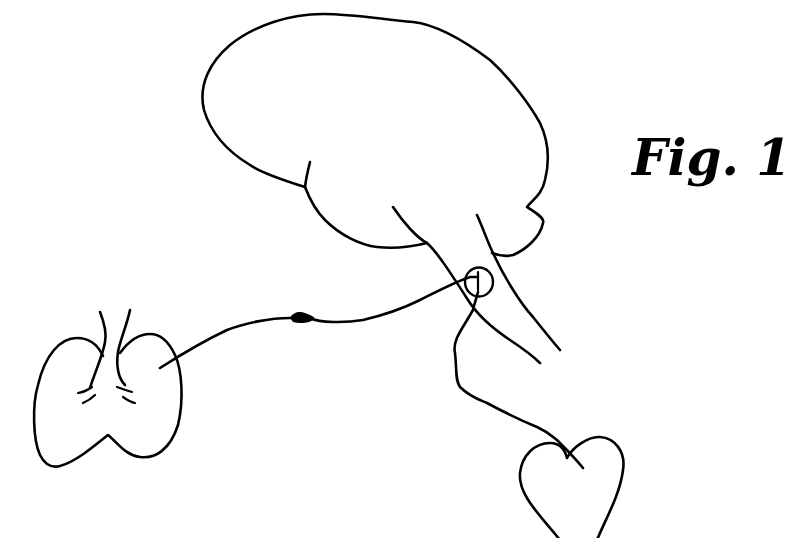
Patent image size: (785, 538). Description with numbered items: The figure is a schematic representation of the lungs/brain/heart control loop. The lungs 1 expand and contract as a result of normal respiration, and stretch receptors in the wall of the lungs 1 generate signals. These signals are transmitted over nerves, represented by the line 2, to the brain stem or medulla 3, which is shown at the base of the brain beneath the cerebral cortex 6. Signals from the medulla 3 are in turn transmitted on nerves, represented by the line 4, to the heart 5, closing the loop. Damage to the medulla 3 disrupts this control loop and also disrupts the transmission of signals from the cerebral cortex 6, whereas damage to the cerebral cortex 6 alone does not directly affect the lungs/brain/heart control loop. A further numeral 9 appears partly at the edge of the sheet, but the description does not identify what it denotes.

The lungs 1 is at (72, 350).
The nerves (line) 2 is at (227, 332).
The brain stem or medulla 3 is at (490, 283).
The nerves (line) 4 is at (457, 385).
The heart 5 is at (532, 478).
The cerebral cortex 6 is at (240, 63).
The stimulator 9 is at (738, 532).